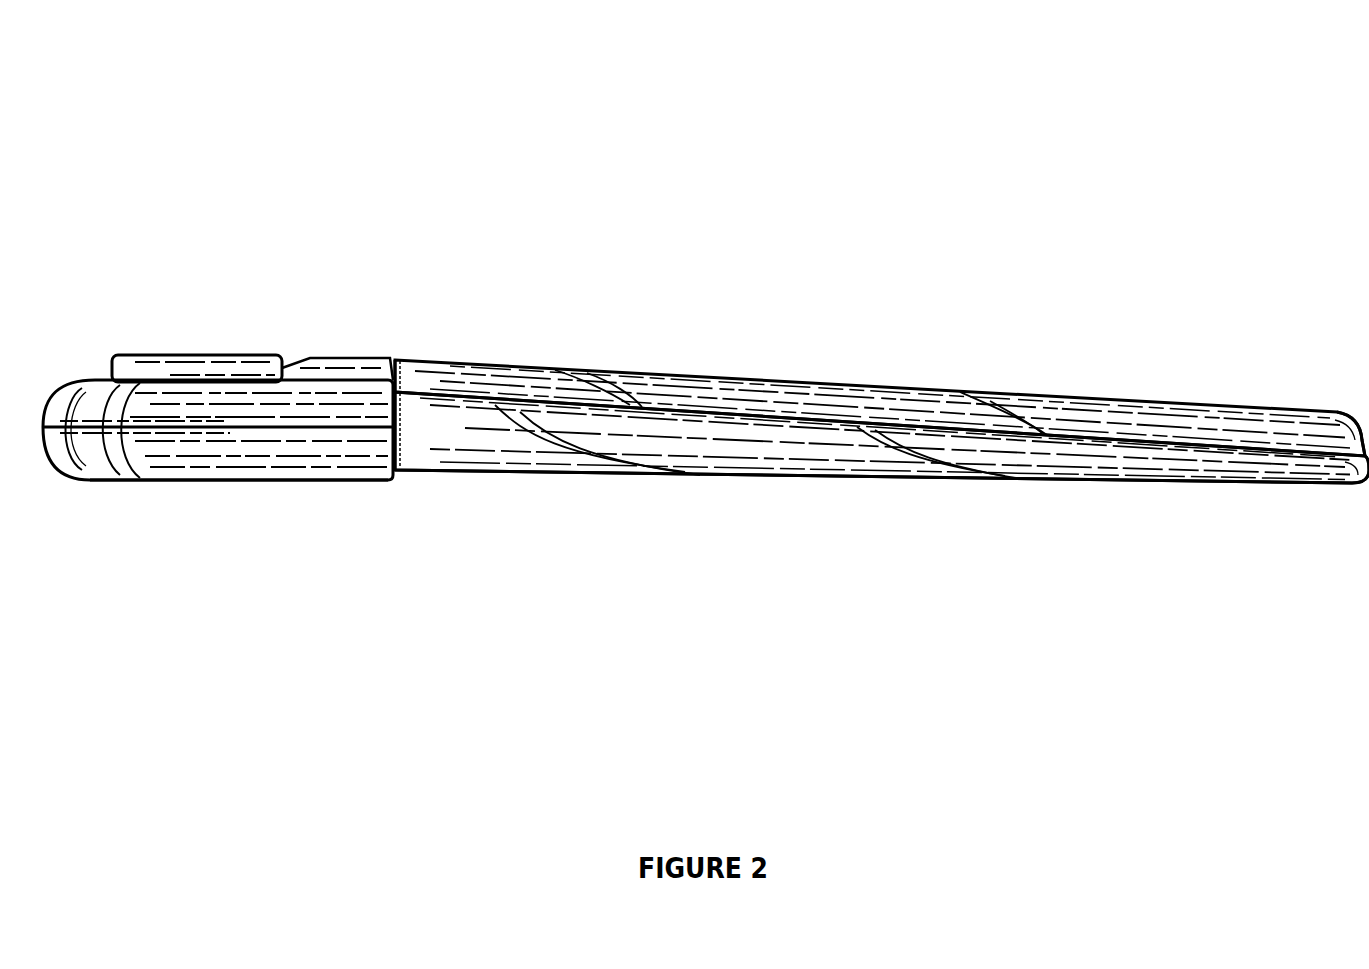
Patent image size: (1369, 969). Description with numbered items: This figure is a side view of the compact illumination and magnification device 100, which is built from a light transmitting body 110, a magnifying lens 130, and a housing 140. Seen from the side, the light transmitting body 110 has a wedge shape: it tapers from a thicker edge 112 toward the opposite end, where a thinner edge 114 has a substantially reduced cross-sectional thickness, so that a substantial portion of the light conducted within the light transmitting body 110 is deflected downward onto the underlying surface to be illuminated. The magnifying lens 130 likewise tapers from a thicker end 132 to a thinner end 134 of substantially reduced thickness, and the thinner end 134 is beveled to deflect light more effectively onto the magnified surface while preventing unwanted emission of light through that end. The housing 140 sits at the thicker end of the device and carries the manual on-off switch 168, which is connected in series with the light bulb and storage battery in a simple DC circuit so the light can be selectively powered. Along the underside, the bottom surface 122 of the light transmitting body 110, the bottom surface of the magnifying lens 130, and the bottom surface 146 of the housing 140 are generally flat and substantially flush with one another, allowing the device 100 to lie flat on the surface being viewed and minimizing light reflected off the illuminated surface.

The illumination and magnification device 100 is at (950, 177).
The light transmitting body 110 is at (727, 445).
The thicker edge 112 is at (404, 460).
The thinner edge 114 is at (1362, 494).
The bottom surface 122 is at (678, 490).
The magnifying lens 130 is at (679, 398).
The thicker end 132 is at (405, 354).
The thinner end 134 is at (1346, 430).
The housing 140 is at (182, 455).
The bottom surface 146 is at (238, 490).
The manual on-off switch 168 is at (182, 368).